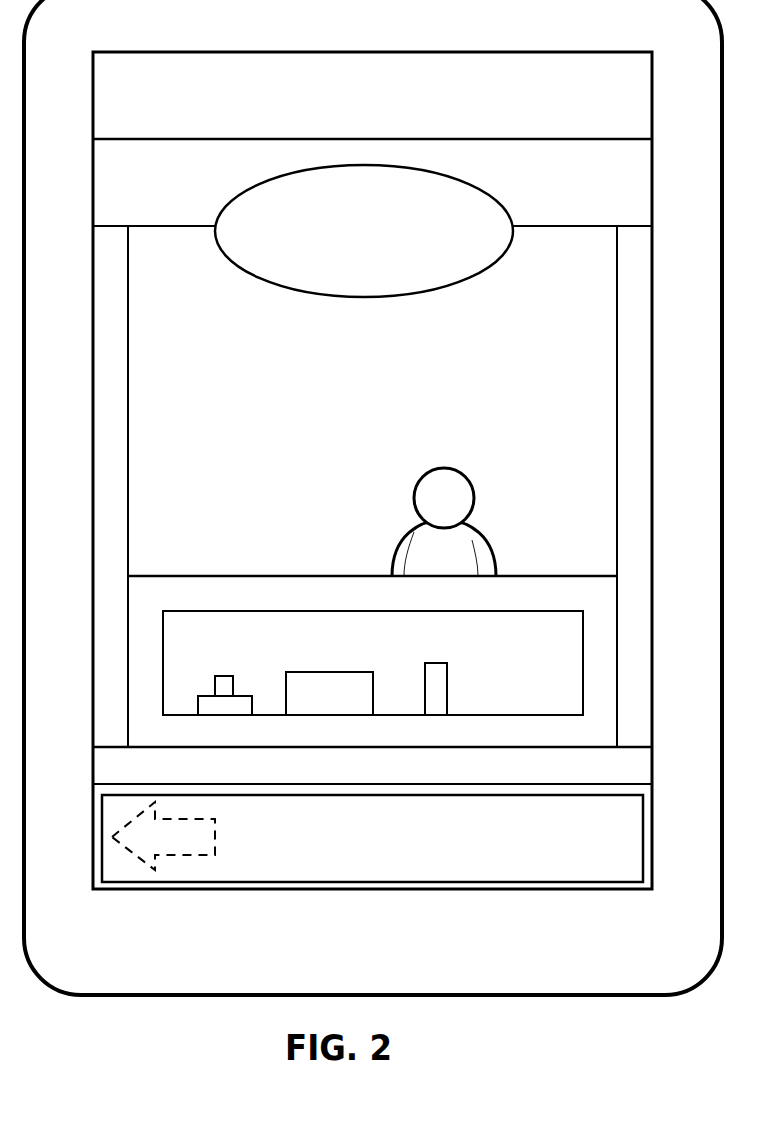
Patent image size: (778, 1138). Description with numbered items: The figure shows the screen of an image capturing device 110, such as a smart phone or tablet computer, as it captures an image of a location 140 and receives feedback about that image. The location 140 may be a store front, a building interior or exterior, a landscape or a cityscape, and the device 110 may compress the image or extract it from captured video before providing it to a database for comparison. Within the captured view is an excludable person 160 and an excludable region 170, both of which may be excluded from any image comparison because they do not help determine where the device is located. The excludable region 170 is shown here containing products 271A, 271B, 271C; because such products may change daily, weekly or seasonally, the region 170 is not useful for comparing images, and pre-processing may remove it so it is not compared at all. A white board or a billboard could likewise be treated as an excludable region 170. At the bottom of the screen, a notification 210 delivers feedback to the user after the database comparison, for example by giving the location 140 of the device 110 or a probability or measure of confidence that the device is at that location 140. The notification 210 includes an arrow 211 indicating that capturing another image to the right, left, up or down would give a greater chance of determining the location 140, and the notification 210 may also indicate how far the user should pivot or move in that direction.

The image capturing device 110 is at (347, 961).
The location 140 is at (330, 254).
The excludable person 160 is at (447, 470).
The excludable region 170 is at (548, 687).
The product 271A is at (228, 676).
The product 271B is at (312, 672).
The product 271C is at (433, 663).
The notification 210 is at (390, 862).
The arrow 211 is at (180, 849).